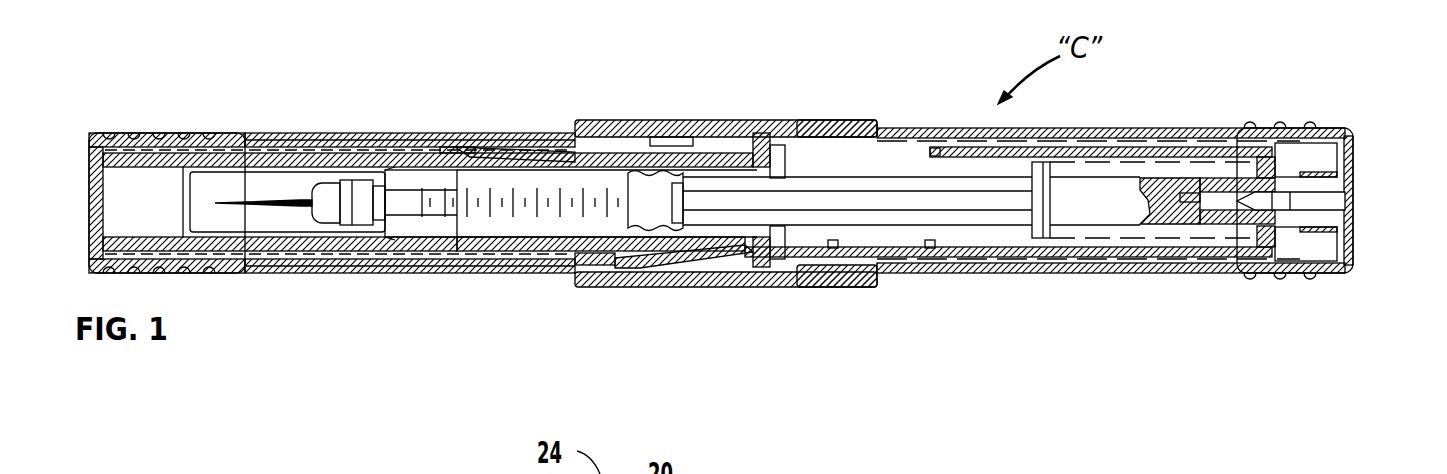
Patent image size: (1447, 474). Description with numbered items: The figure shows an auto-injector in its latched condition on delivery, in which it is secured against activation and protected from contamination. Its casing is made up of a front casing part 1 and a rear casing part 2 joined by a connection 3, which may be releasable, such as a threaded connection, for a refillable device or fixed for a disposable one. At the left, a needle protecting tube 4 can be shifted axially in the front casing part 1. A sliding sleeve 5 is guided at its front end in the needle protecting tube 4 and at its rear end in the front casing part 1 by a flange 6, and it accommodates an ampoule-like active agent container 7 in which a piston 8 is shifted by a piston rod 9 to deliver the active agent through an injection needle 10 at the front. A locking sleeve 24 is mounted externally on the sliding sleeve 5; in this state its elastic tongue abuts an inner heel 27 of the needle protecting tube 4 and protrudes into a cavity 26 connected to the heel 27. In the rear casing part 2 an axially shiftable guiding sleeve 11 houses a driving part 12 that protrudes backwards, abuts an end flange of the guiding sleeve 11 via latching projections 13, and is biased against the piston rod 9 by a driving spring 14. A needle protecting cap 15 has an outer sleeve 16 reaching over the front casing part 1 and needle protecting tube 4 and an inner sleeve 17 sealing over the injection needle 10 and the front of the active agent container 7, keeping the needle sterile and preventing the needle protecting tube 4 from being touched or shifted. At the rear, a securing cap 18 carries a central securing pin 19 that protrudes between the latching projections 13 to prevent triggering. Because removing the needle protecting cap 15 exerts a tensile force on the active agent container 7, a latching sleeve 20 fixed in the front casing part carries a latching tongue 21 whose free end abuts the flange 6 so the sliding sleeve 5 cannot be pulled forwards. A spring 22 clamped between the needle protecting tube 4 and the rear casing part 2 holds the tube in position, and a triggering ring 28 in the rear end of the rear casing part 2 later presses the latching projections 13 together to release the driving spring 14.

The front casing part 1 is at (585, 120).
The rear casing part 2 is at (1199, 128).
The connection 3 is at (840, 120).
The needle protecting tube 4 is at (333, 133).
The sliding sleeve 5 is at (655, 230).
The flange 6 is at (768, 255).
The active agent container 7 is at (497, 240).
The piston 8 is at (670, 225).
The piston rod 9 is at (896, 180).
The injection needle 10 is at (296, 205).
The guiding sleeve 11 is at (1265, 273).
The driving part 12 is at (1083, 210).
The latching projections 13 is at (1312, 273).
The driving spring 14 is at (1152, 237).
The needle protecting cap 15 is at (97, 130).
The outer sleeve 16 is at (277, 130).
The inner sleeve 17 is at (385, 237).
The securing cap 18 is at (1356, 140).
The securing pin 19 is at (1327, 197).
The latching sleeve 20 is at (660, 120).
The latching tongue 21 is at (720, 260).
The spring 22 is at (1183, 257).
The locking sleeve 24 is at (560, 240).
The cavity 26 is at (527, 148).
The inner heel 27 is at (457, 147).
The triggering ring 28 is at (1340, 265).